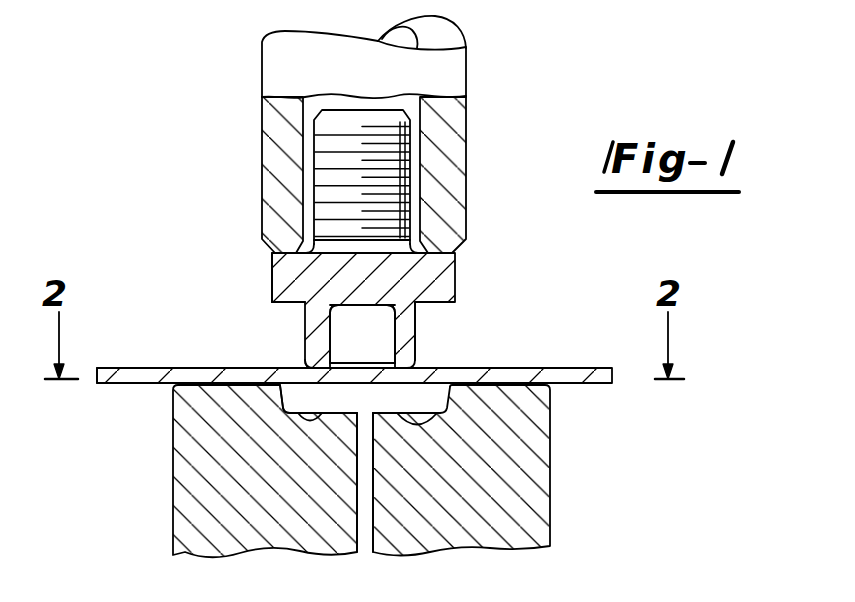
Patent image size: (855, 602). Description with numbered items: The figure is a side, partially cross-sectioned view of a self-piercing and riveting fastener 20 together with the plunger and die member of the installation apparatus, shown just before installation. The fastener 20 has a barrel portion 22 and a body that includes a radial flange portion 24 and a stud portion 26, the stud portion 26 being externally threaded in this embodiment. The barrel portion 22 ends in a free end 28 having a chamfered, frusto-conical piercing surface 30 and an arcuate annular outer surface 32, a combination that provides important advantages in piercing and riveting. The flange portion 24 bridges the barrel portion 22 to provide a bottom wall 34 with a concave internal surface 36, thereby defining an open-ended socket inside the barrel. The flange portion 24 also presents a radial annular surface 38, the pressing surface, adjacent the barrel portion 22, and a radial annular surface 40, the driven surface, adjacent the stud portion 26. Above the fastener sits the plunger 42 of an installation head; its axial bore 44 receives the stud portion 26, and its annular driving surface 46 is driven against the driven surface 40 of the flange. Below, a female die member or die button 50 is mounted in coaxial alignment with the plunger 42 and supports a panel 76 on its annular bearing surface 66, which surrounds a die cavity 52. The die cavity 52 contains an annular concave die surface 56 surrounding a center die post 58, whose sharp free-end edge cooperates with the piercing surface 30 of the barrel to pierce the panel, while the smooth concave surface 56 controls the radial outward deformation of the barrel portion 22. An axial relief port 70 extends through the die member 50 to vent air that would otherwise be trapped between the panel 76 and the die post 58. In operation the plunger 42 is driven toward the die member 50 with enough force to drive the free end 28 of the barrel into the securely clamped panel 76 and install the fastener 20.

The self-piercing and riveting fastener 20 is at (408, 176).
The barrel portion 22 is at (415, 326).
The radial flange portion 24 is at (445, 273).
The stud portion 26 is at (320, 157).
The free end 28 is at (296, 358).
The chamfered piercing surface 30 is at (346, 363).
The arcuate annular outer surface 32 is at (418, 358).
The bottom wall 34 is at (367, 289).
The concave internal surface 36 is at (362, 334).
The radial annular surface 38 is at (280, 308).
The radial annular surface 40 is at (455, 245).
The plunger 42 is at (443, 70).
The axial bore 44 is at (307, 116).
The annular driving surface 46 is at (275, 280).
The female die member 50 is at (537, 458).
The die cavity 52 is at (280, 390).
The annular concave die surface 56 is at (297, 414).
The center die post 58 is at (365, 404).
The annular bearing surface 66 is at (497, 370).
The axial relief port 70 is at (360, 512).
The panel 76 is at (155, 367).